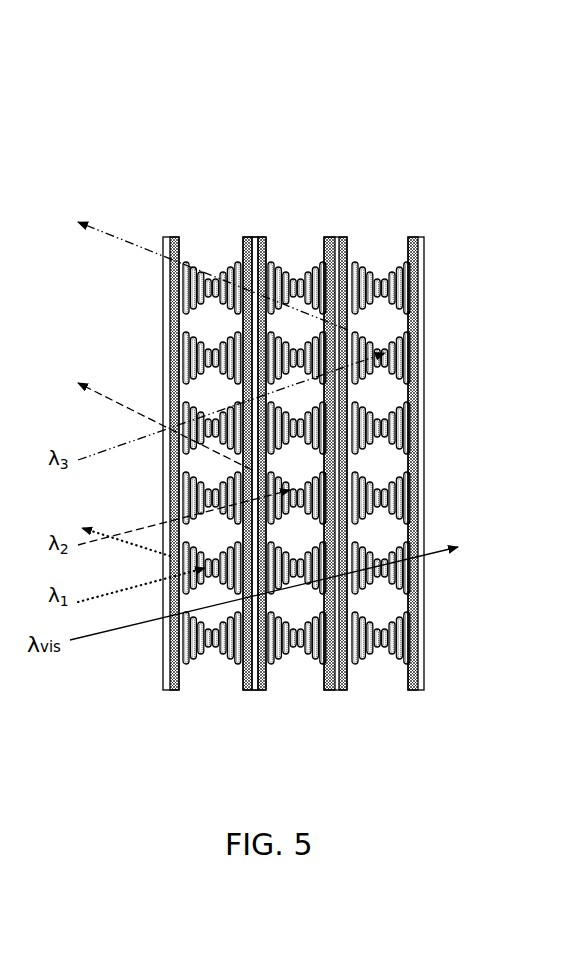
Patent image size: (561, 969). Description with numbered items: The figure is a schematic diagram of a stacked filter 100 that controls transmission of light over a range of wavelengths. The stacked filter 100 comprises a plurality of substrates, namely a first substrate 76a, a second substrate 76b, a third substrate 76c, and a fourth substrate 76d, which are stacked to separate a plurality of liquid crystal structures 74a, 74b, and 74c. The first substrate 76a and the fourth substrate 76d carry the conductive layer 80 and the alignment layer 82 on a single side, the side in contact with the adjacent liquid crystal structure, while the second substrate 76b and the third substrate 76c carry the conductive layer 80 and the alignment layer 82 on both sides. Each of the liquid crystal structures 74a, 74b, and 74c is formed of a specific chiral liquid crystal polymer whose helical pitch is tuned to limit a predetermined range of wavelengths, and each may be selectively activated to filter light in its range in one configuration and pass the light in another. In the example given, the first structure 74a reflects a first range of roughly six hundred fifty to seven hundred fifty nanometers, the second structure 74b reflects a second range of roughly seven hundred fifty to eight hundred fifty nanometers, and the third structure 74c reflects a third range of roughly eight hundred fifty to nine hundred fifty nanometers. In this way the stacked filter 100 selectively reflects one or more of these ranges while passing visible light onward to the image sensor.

The stacked filter 100 is at (178, 160).
The first liquid crystal structure 74a is at (210, 246).
The second liquid crystal structure 74b is at (293, 246).
The third liquid crystal structure 74c is at (377, 246).
The first substrate 76a is at (164, 690).
The second substrate 76b is at (256, 690).
The third substrate 76c is at (328, 690).
The fourth substrate 76d is at (417, 690).
The conductive layer 80 is at (250, 690).
The alignment layer 82 is at (245, 690).